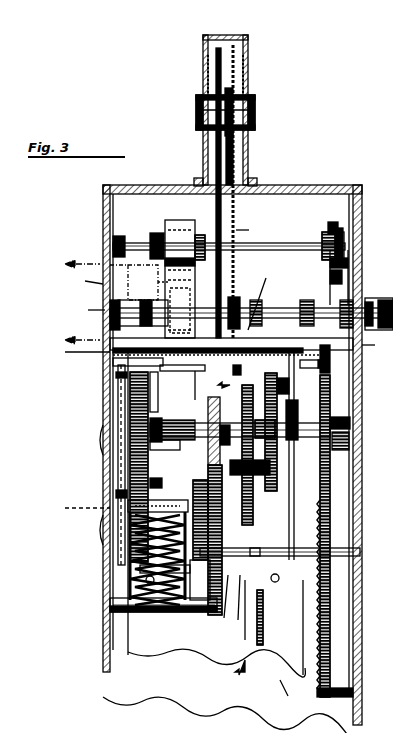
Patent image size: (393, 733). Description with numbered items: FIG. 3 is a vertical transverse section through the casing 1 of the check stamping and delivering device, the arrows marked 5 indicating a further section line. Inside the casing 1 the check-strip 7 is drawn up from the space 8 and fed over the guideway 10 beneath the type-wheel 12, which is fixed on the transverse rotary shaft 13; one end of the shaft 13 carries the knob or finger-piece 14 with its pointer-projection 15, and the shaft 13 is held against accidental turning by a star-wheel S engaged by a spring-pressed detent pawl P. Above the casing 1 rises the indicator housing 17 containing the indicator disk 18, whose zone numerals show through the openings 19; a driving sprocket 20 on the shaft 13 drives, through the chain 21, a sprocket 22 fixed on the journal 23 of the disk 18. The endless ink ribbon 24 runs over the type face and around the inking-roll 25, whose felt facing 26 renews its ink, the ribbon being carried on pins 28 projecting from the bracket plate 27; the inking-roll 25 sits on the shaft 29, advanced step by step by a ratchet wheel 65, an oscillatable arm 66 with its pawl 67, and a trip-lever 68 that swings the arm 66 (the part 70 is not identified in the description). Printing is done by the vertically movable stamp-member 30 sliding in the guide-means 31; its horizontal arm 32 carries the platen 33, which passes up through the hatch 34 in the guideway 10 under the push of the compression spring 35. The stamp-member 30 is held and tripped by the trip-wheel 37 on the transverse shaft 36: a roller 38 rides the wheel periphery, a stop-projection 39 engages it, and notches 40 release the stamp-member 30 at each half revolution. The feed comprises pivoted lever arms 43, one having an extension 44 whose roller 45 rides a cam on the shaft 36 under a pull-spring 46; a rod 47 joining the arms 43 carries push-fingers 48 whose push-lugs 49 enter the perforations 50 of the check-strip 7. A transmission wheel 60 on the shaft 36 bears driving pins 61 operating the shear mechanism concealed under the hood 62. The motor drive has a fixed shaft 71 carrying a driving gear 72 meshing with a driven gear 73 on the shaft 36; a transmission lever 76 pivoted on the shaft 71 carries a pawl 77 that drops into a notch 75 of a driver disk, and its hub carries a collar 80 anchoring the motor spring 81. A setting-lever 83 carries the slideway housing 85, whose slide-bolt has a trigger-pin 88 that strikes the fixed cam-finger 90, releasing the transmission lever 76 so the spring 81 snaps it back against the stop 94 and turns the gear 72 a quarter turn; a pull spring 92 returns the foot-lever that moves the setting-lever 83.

The casing 1 is at (320, 182).
The section line 5 is at (77, 292).
The check-strip 7 is at (232, 481).
The space 8 is at (231, 541).
The check-strip supporting table or guideway 10 is at (231, 508).
The type-wheel 12 is at (151, 284).
The transverse rotary shaft 13 is at (265, 330).
The knob or finger-piece 14 is at (358, 294).
The pointer-projection 15 is at (377, 341).
The housing 17 is at (204, 44).
The indicator disk 18 is at (230, 56).
The openings 19 is at (206, 72).
The driving sprocket 20 is at (235, 310).
The driving chain 21 is at (236, 206).
The sprocket 22 is at (248, 138).
The journal 23 is at (255, 110).
The ink carrying ribbon 24 is at (178, 222).
The inking-roll 25 is at (165, 232).
The felt pad or facing 26 is at (162, 232).
The bracket plate 27 is at (252, 227).
The carrying pins 28 is at (165, 272).
The transverse rotary shaft 29 is at (298, 240).
The stamp-member 30 is at (116, 376).
The guide-means 31 is at (118, 414).
The horizontal arm 32 is at (162, 392).
The platen 33 is at (183, 382).
The opening or hatch 34 is at (113, 364).
The compression spring 35 is at (112, 554).
The transverse rotary shaft 36 is at (165, 454).
The trip-wheel 37 is at (140, 412).
The roller 38 is at (152, 502).
The stop-projection 39 is at (74, 507).
The notches 40 is at (163, 485).
The lever arms 43 is at (74, 355).
The extension 44 is at (289, 383).
The roller 45 is at (330, 603).
The pull-spring 46 is at (316, 369).
The rod 47 is at (336, 392).
The push-fingers or dogs 48 is at (285, 330).
The push lugs 49 is at (336, 475).
The perforations 50 is at (222, 586).
The transmission wheel 60 is at (272, 427).
The driving pins 61 is at (276, 398).
The cover-shell or hood 62 is at (330, 452).
The ratchet wheel 65 is at (348, 222).
The oscillatable arm 66 is at (338, 288).
The pawl 67 is at (336, 264).
The trip-lever 68 is at (330, 358).
The pin 70 is at (243, 373).
The fixed non-rotatable shaft 71 is at (280, 552).
The driving gear 72 is at (248, 645).
The driven gear 73 is at (250, 453).
The notch 75 is at (264, 599).
The transmission lever 76 is at (223, 607).
The spring pressed pawl or dog 77 is at (240, 602).
The collar 80 is at (200, 580).
The motor spring 81 is at (165, 566).
The setting-lever 83 is at (214, 462).
The slideway housing 85 is at (210, 432).
The trigger-pin 88 is at (262, 494).
The cam-finger 90 is at (270, 616).
The pull spring 92 is at (150, 555).
The stop 94 is at (210, 612).
The detent pawl P is at (87, 281).
The star-wheel S is at (89, 309).